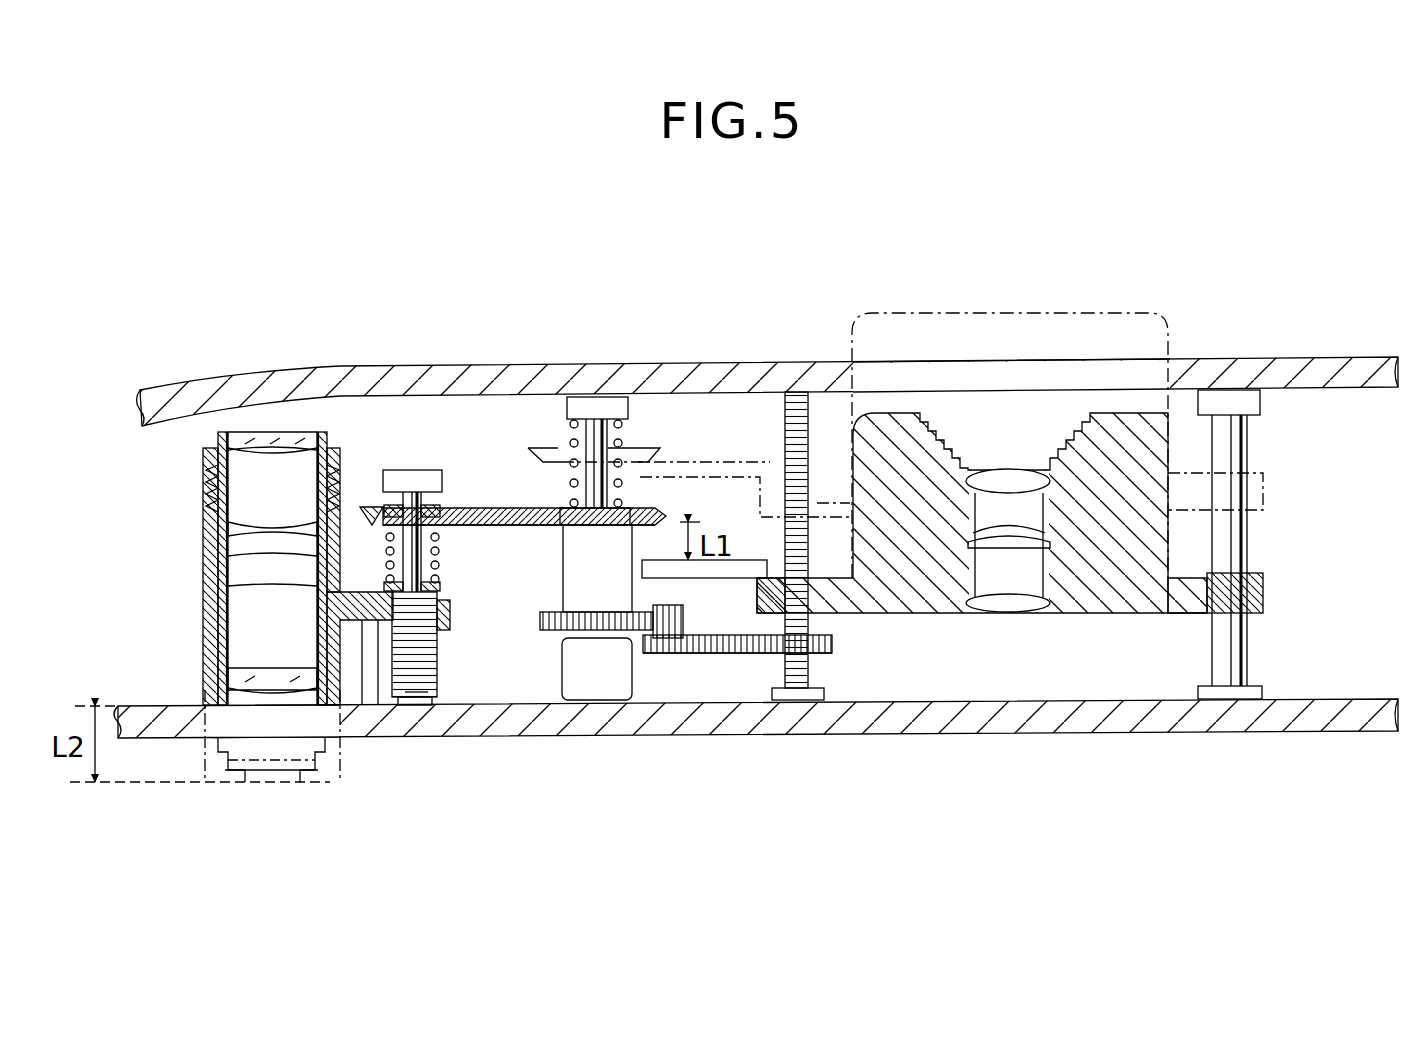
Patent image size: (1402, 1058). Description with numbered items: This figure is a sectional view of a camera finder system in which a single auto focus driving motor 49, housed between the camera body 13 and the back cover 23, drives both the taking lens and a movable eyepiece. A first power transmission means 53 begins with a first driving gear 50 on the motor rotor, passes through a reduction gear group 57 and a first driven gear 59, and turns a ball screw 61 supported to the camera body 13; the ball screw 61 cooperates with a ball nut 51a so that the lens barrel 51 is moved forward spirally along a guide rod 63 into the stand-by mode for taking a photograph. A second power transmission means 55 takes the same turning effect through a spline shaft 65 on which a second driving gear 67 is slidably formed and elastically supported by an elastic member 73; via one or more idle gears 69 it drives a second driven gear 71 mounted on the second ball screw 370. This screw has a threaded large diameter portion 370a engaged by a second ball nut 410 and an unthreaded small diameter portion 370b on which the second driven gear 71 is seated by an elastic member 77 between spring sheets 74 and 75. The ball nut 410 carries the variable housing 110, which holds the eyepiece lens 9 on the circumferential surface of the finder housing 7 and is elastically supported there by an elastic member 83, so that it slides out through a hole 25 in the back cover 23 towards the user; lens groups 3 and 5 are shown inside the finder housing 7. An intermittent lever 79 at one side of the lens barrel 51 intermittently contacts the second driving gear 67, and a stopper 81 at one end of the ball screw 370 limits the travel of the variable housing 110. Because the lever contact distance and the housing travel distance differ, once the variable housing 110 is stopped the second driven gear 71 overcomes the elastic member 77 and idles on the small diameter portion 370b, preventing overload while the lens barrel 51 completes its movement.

The first lens group 3 is at (262, 432).
The second lens group 5 is at (232, 528).
The finder housing 7 is at (208, 622).
The eyepiece lens 9 is at (212, 680).
The camera body 13 is at (1290, 300).
The back cover 23 is at (1125, 734).
The hole 25 is at (270, 728).
The auto focus driving motor 49 is at (598, 686).
The first driving gear 50 is at (634, 624).
The lens barrel 51 is at (1155, 540).
The ball nut 51a is at (822, 582).
The first power transmission means 53 is at (755, 666).
The second power transmission means 55 is at (482, 478).
The reduction gear group 57 is at (710, 656).
The first driven gear 59 is at (812, 642).
The ball screw 61 is at (800, 392).
The guide rod 63 is at (1248, 450).
The spline shaft 65 is at (594, 397).
The second driving gear 67 is at (552, 510).
The idle gears 69 is at (505, 506).
The second driven gear 71 is at (380, 505).
The elastic member 73 is at (626, 443).
The spring sheet 74 is at (350, 548).
The spring sheet 75 is at (313, 585).
The elastic member 77 is at (450, 567).
The intermittent lever 79 is at (740, 560).
The stopper 81 is at (438, 690).
The elastic member 83 is at (206, 488).
The variable housing 110 is at (210, 652).
The ball screw 370 is at (452, 664).
The large diameter portion 370a is at (418, 694).
The small diameter portion 370b is at (423, 470).
The ball nut 410 is at (363, 625).